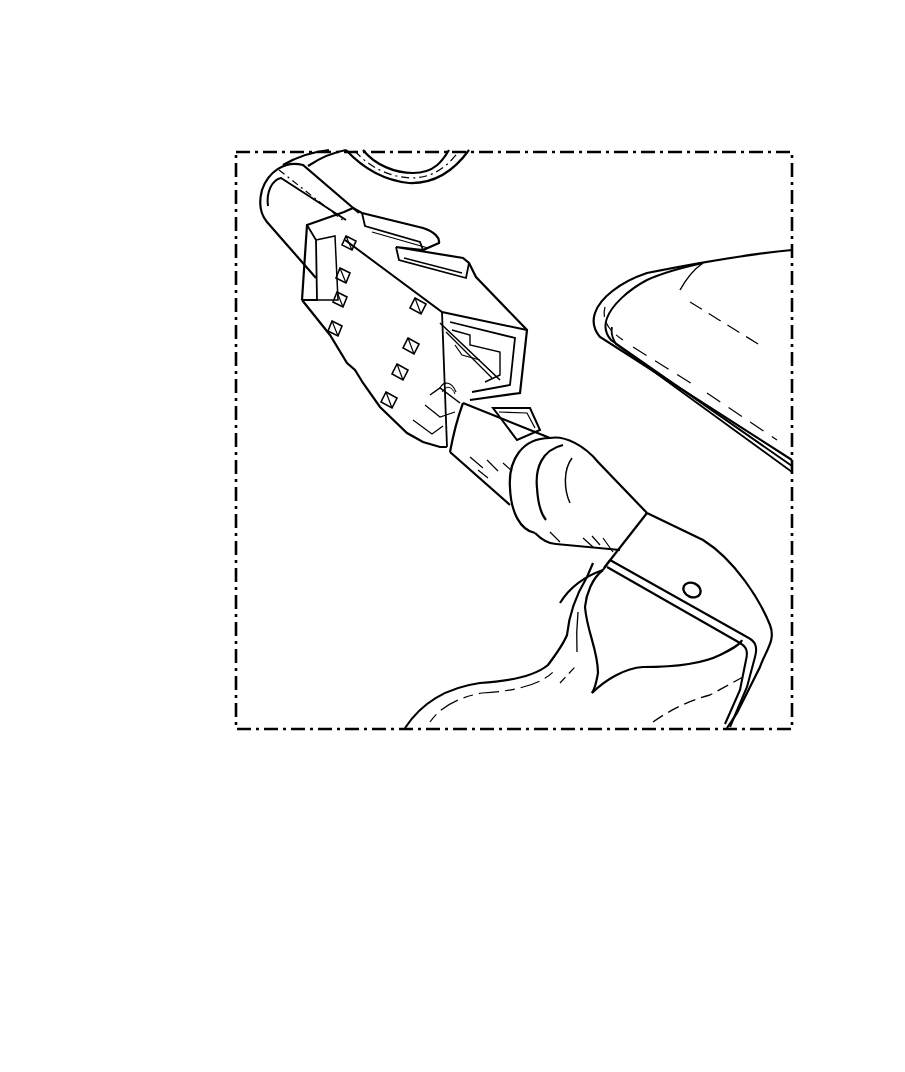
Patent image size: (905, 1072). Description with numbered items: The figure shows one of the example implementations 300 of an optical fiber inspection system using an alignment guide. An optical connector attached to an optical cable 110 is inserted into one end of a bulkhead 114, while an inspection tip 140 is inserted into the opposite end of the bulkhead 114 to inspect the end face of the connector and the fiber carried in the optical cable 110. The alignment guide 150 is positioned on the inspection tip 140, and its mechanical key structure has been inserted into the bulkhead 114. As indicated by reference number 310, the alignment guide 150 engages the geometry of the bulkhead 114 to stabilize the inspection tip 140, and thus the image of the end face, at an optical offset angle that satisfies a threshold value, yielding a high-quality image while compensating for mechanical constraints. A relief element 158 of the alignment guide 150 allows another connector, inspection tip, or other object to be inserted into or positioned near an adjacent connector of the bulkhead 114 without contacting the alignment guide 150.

The example implementations 300 is at (138, 44).
The reference number 310 is at (487, 733).
The optical cable 110 is at (467, 167).
The bulkhead 114 is at (385, 406).
The alignment guide 150 is at (487, 498).
The relief element 158 is at (535, 430).
The inspection tip 140 is at (562, 553).